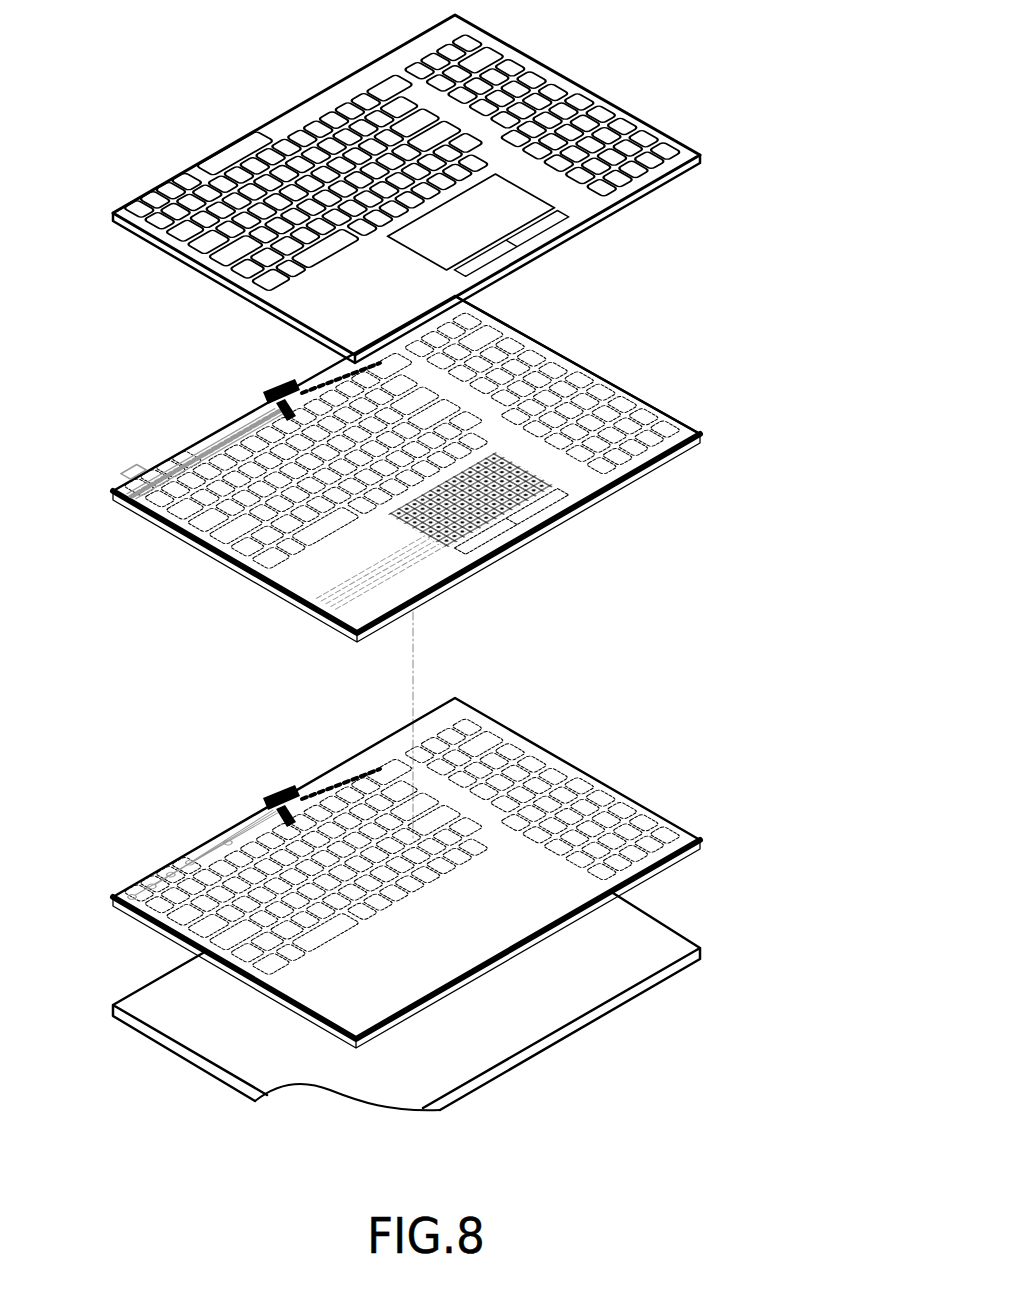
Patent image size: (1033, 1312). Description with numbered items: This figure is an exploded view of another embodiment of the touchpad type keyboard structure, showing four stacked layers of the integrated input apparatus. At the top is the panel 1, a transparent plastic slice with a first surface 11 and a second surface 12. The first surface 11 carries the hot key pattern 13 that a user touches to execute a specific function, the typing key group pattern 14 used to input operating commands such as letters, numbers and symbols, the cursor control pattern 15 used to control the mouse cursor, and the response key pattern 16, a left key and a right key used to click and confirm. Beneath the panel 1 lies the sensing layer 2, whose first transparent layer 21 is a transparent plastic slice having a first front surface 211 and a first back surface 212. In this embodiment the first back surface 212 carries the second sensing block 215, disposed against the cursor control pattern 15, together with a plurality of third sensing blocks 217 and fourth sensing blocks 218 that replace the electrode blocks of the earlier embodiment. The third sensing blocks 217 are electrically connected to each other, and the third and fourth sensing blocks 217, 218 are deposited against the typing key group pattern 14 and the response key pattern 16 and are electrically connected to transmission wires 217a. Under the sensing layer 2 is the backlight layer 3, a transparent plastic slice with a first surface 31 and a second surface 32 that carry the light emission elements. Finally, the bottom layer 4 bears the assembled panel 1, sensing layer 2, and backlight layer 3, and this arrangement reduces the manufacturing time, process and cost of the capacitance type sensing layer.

The panel 1 is at (443, 188).
The first surface 11 is at (673, 140).
The second surface 12 is at (683, 178).
The hot key pattern 13 is at (185, 168).
The typing key group pattern 14 is at (552, 68).
The cursor control pattern 15 is at (502, 223).
The response key pattern 16 is at (555, 218).
The sensing layer 2 is at (448, 449).
The first transparent layer 21 is at (614, 382).
The first front surface 211 is at (683, 420).
The first back surface 212 is at (683, 449).
The second sensing block 215 is at (548, 478).
The third sensing blocks 217 is at (228, 563).
The transmission wires 217a is at (340, 383).
The fourth sensing blocks 218 is at (574, 511).
The backlight layer 3 is at (446, 873).
The first surface 31 is at (683, 827).
The second surface 32 is at (683, 857).
The bottom layer 4 is at (693, 967).